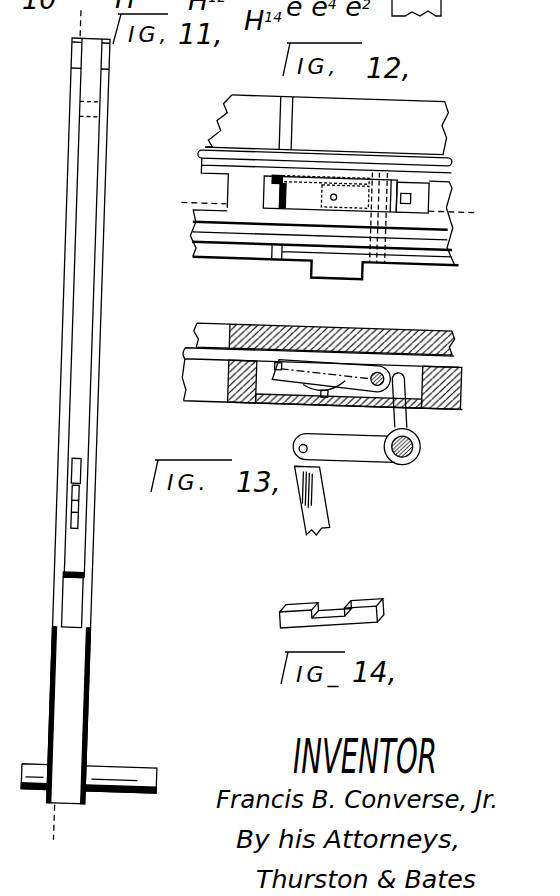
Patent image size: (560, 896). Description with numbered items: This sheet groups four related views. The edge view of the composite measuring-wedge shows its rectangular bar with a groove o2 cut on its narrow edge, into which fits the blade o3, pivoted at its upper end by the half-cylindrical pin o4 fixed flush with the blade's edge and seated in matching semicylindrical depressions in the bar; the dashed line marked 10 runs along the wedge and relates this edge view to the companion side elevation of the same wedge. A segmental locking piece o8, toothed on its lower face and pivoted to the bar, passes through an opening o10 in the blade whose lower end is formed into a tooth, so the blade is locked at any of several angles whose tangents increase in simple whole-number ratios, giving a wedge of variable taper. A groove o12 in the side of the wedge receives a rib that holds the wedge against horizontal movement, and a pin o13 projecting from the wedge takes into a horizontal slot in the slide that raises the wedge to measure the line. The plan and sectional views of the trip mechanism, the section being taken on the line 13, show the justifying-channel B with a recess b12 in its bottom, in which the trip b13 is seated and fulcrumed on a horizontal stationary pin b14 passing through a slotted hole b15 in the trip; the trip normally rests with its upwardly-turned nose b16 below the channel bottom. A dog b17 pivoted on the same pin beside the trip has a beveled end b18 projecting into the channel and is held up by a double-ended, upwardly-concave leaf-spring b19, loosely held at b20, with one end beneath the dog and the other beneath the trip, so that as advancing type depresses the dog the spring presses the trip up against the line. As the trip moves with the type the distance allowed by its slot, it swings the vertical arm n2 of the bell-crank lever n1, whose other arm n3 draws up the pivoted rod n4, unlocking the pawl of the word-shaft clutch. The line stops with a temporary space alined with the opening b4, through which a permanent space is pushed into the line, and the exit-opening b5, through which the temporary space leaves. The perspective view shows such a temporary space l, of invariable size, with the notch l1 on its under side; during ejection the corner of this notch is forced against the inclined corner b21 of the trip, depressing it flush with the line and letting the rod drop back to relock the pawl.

In FIG. 11, the section line 10- 10 is at (70, 439).
In FIG. 11, the groove o2 is at (78, 604).
In FIG. 11, the blade o3 is at (85, 214).
In FIG. 11, the half-cylindrical pin o4 is at (77, 55).
In FIG. 11, the segmental piece o8 is at (92, 500).
In FIG. 11, the opening o10 is at (90, 468).
In FIG. 11, the groove o12 is at (88, 558).
In FIG. 11, the pin o13 is at (59, 764).
In FIG. 12, the justifying-channel B is at (314, 187).
In FIG. 13, the justifying-channel B is at (334, 366).
In FIG. 12, the opening b4 is at (280, 250).
In FIG. 12, the exit-opening b5 is at (280, 119).
In FIG. 12, the recess b12 is at (426, 179).
In FIG. 13, the recess b12 is at (426, 405).
In FIG. 12, the trip b13 is at (314, 194).
In FIG. 13, the trip b13 is at (304, 376).
In FIG. 12, the horizontal stationary pin b14 is at (392, 215).
In FIG. 13, the horizontal stationary pin b14 is at (343, 359).
In FIG. 12, the slotted hole b15 is at (377, 190).
In FIG. 13, the slotted hole b15 is at (374, 379).
In FIG. 12, the nose b16 is at (281, 190).
In FIG. 13, the nose b16 is at (233, 372).
In FIG. 12, the dog b17 is at (381, 181).
In FIG. 13, the dog b17 is at (379, 366).
In FIG. 12, the beveled end b18 is at (273, 177).
In FIG. 13, the beveled end b18 is at (278, 362).
In FIG. 12, the double-ended leaf-spring b19 is at (355, 200).
In FIG. 13, the double-ended leaf-spring b19 is at (327, 392).
In FIG. 12, the holding point of leaf-spring b20 is at (316, 173).
In FIG. 13, the holding point of leaf-spring b20 is at (342, 386).
In FIG. 12, the inclined corner b21 is at (283, 204).
In FIG. 13, the inclined corner b21 is at (278, 370).
In FIG. 12, the section line 13 13 is at (334, 210).
In FIG. 13, the bell-crank lever n1 is at (417, 443).
In FIG. 12, the vertical arm n2 is at (412, 191).
In FIG. 13, the vertical arm n2 is at (402, 383).
In FIG. 13, the arm n3 is at (344, 448).
In FIG. 13, the rod n4 is at (330, 498).
In FIG. 14, the temporary space l is at (368, 609).
In FIG. 14, the notch l1 is at (326, 614).